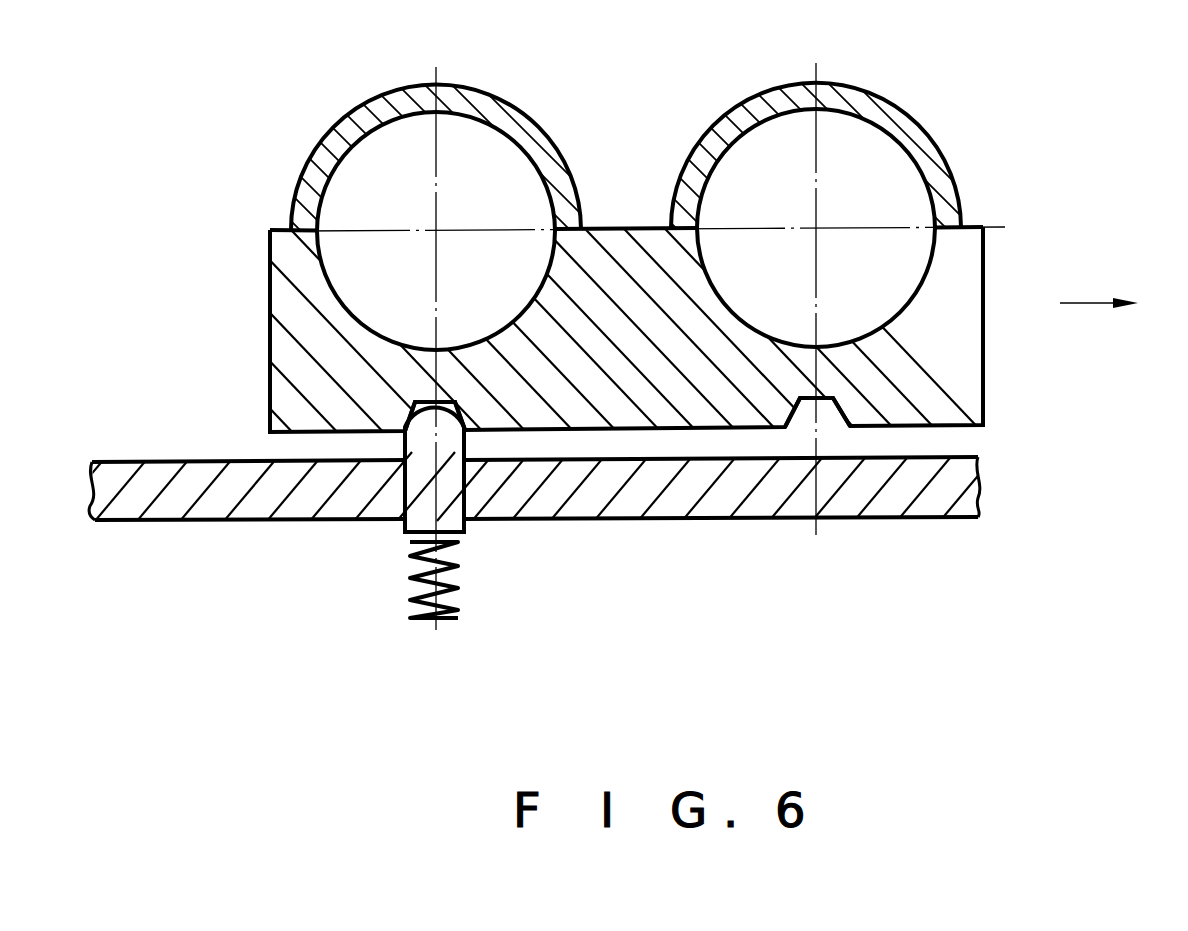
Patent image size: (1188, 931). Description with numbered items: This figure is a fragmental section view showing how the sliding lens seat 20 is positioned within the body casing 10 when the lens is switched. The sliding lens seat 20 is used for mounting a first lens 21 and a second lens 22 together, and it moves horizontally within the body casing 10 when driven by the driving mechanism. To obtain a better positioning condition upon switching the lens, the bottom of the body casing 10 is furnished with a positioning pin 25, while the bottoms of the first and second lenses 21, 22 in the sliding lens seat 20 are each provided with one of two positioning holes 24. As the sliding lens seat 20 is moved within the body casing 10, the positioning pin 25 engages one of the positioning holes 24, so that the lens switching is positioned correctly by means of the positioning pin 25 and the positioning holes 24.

The body casing 10 is at (953, 492).
The sliding lens seat 20 is at (1036, 150).
The first lens 21 is at (392, 108).
The second lens 22 is at (773, 100).
The positioning holes 24 is at (413, 408).
The positioning pin 25 is at (400, 522).